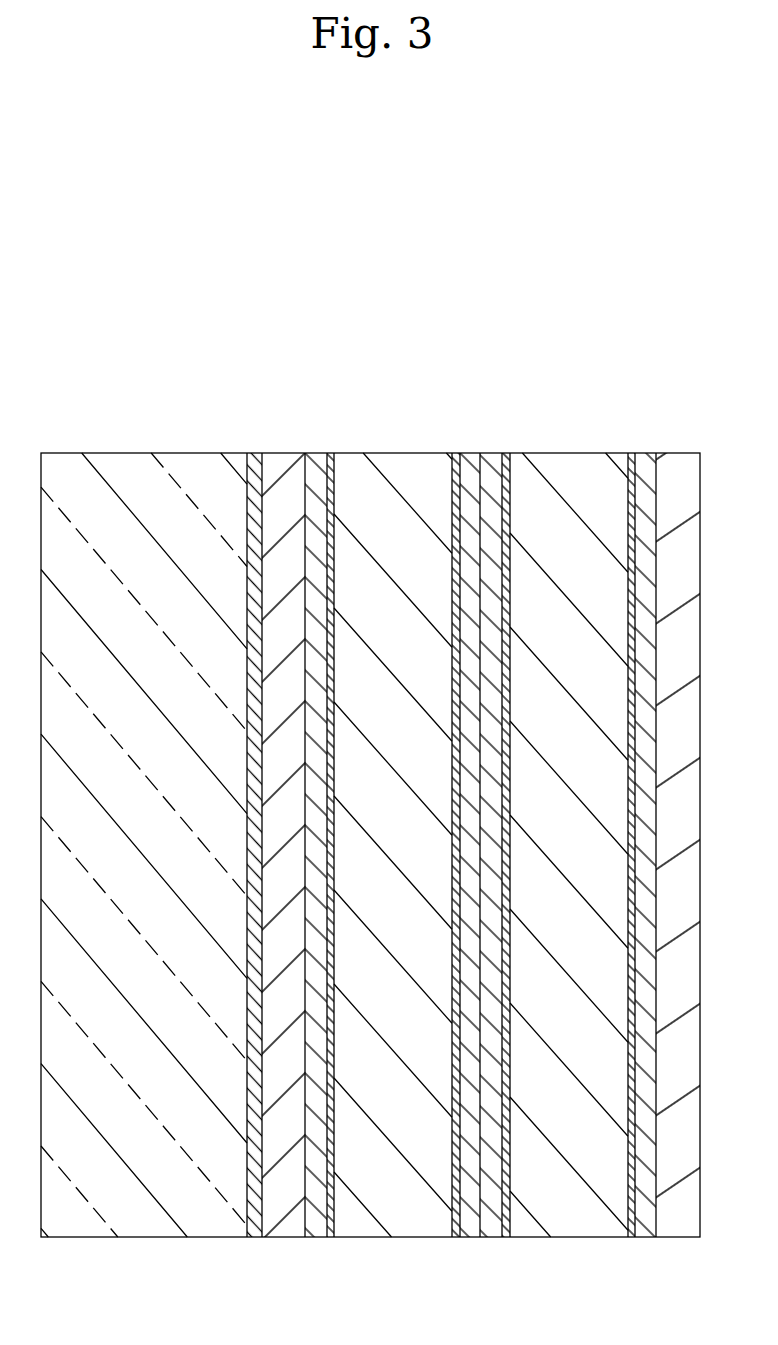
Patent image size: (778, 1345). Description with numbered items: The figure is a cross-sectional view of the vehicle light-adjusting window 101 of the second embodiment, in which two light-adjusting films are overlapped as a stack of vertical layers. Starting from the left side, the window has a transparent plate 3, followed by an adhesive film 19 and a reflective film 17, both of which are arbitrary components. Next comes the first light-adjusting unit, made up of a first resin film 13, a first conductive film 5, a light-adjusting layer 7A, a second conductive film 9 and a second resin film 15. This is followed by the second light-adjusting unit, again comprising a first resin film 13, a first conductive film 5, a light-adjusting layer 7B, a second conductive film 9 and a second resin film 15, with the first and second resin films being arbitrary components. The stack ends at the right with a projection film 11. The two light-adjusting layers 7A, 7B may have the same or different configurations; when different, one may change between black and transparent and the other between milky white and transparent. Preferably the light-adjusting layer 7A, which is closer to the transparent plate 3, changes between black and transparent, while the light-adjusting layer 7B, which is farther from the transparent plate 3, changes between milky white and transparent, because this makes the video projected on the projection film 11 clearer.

The vehicle light-adjusting window 101 is at (99, 345).
The transparent plate 3 is at (147, 470).
The adhesive film 19 is at (252, 453).
The reflective film 17 is at (283, 457).
The first resin film 13 is at (317, 453).
The first conductive film 5 is at (329, 455).
The light-adjusting layer 7A is at (390, 458).
The second conductive film 9 is at (457, 453).
The second resin film 15 is at (468, 455).
The light-adjusting layer 7B is at (577, 458).
The projection film 11 is at (678, 455).